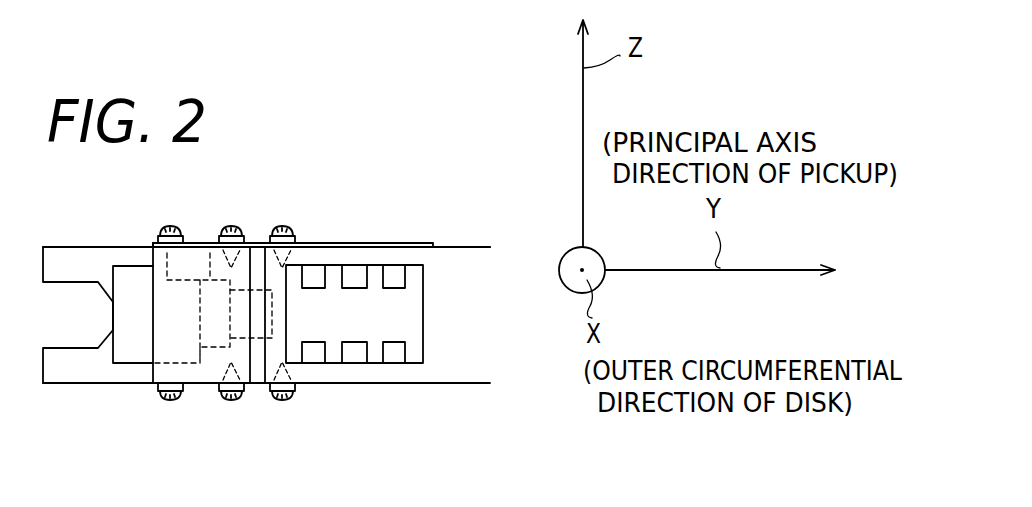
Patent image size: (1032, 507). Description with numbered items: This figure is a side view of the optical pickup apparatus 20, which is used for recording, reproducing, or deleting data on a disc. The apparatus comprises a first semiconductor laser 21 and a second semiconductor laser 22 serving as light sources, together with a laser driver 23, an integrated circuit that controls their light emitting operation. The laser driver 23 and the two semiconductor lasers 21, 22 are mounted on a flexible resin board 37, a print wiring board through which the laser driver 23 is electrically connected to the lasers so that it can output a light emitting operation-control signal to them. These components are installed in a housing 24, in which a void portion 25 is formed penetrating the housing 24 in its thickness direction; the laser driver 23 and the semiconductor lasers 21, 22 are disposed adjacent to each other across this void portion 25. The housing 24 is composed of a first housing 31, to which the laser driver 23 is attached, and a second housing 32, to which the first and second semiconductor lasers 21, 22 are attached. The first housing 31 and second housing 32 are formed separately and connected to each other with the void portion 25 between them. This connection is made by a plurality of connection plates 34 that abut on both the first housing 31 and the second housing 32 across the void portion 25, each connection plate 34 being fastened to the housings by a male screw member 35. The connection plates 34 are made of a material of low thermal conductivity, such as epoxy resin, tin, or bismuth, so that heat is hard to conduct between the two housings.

The optical pickup apparatus 20 is at (264, 138).
The first semiconductor laser 21 is at (128, 320).
The second semiconductor laser 22 is at (413, 313).
The laser driver 23 is at (188, 258).
The housing 24 is at (467, 213).
The void portion 25 is at (258, 328).
The first housing 31 is at (200, 363).
The second housing 32 is at (415, 368).
The connection plate 34 is at (158, 242).
The male screw member 35 is at (168, 231).
The flexible resin board 37 is at (381, 245).